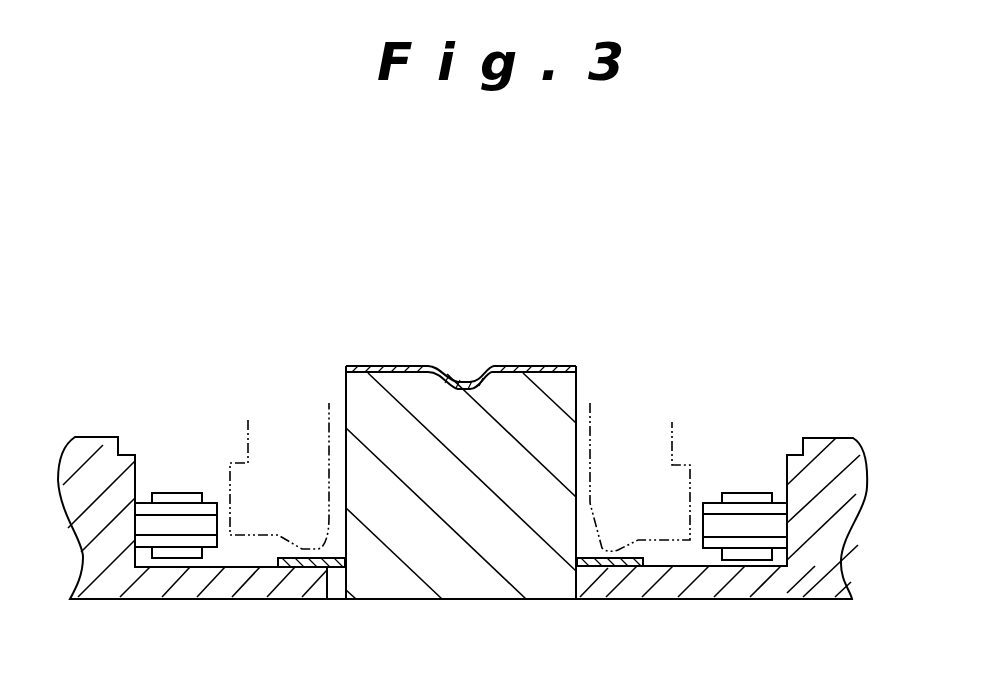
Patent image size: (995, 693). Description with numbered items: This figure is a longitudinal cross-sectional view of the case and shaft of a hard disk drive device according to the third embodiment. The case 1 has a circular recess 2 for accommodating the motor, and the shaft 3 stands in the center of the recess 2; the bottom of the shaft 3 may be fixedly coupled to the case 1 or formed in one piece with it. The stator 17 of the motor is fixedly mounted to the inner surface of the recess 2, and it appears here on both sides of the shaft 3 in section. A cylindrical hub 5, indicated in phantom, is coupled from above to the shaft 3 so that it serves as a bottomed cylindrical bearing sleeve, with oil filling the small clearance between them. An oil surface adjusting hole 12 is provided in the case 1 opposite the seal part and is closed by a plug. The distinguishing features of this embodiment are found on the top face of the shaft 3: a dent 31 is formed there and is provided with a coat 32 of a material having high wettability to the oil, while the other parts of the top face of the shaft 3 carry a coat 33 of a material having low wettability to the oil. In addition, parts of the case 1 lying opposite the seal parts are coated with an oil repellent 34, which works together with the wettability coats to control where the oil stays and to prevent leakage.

The case 1 is at (95, 473).
The circular recess 2 is at (247, 567).
The shaft 3 is at (487, 553).
The cylindrical hub 5 is at (672, 448).
The oil surface adjusting hole 12 is at (335, 585).
The stator 17 is at (182, 523).
The dent 31 is at (473, 380).
The coat of high-wettability material 32 is at (452, 378).
The coat of low-wettability material 33 is at (400, 365).
The oil repellent 34 is at (610, 568).